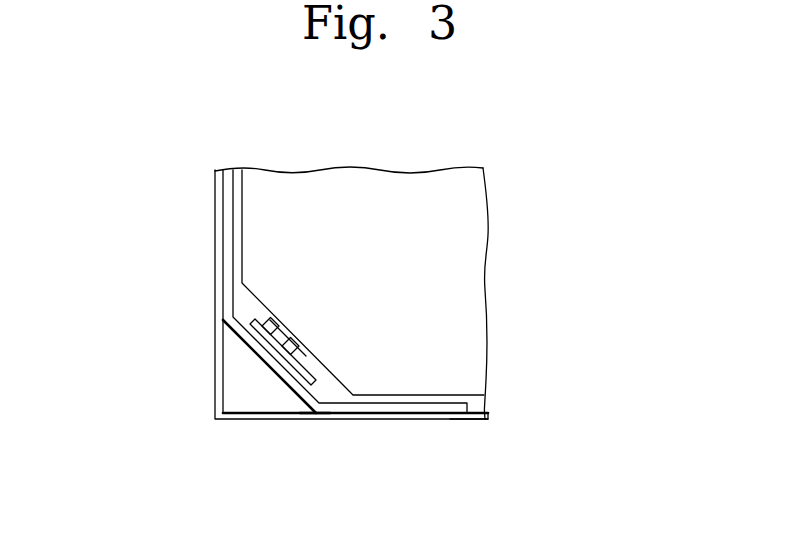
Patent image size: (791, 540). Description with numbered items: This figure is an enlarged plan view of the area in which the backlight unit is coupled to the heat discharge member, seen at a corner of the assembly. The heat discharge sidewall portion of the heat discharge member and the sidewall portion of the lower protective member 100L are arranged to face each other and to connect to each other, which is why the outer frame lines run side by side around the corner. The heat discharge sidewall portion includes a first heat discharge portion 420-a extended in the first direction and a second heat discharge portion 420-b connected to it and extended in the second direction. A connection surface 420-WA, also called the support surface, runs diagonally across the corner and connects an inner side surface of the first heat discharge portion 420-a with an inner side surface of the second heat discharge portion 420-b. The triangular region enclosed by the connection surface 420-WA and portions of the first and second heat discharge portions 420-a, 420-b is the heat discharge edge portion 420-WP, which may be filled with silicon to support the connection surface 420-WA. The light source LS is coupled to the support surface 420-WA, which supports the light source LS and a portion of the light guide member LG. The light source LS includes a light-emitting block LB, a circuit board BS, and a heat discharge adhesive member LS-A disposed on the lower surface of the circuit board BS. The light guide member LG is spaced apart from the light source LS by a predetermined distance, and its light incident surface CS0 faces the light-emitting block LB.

The light guide member LG is at (465, 274).
The first heat discharge portion 420-a is at (226, 237).
The second heat discharge portion 420-b is at (385, 407).
The heat discharge edge portion 420-WP is at (254, 381).
The connection surface 420-WA is at (316, 389).
The light incident surface CS0 is at (251, 291).
The light-emitting block LB is at (275, 335).
The circuit board BS is at (290, 348).
The heat discharge adhesive member LS-A is at (305, 355).
The light source LS is at (412, 342).
The lower protective member 100L is at (463, 415).